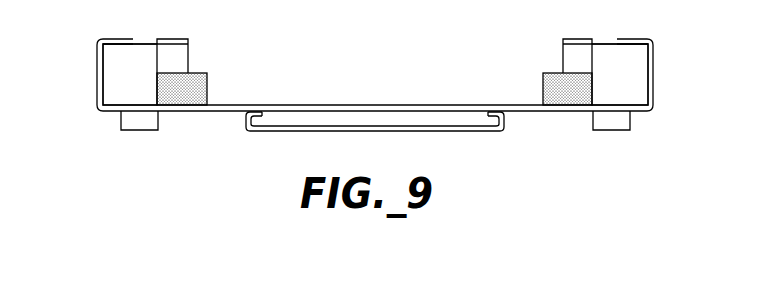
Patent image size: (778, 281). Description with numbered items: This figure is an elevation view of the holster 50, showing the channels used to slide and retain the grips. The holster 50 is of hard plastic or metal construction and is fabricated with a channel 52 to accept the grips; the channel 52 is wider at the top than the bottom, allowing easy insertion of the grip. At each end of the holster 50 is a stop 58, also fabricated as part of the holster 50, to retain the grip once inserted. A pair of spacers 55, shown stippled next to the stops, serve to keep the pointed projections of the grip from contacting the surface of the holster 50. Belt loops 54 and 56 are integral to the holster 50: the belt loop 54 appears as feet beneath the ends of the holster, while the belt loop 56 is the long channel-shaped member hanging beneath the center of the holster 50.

The holster 50 is at (686, 61).
The channel 52 is at (173, 47).
The belt loop 54 is at (630, 118).
The spacer 55 is at (198, 92).
The belt loop 56 is at (465, 133).
The stop 58 is at (192, 58).